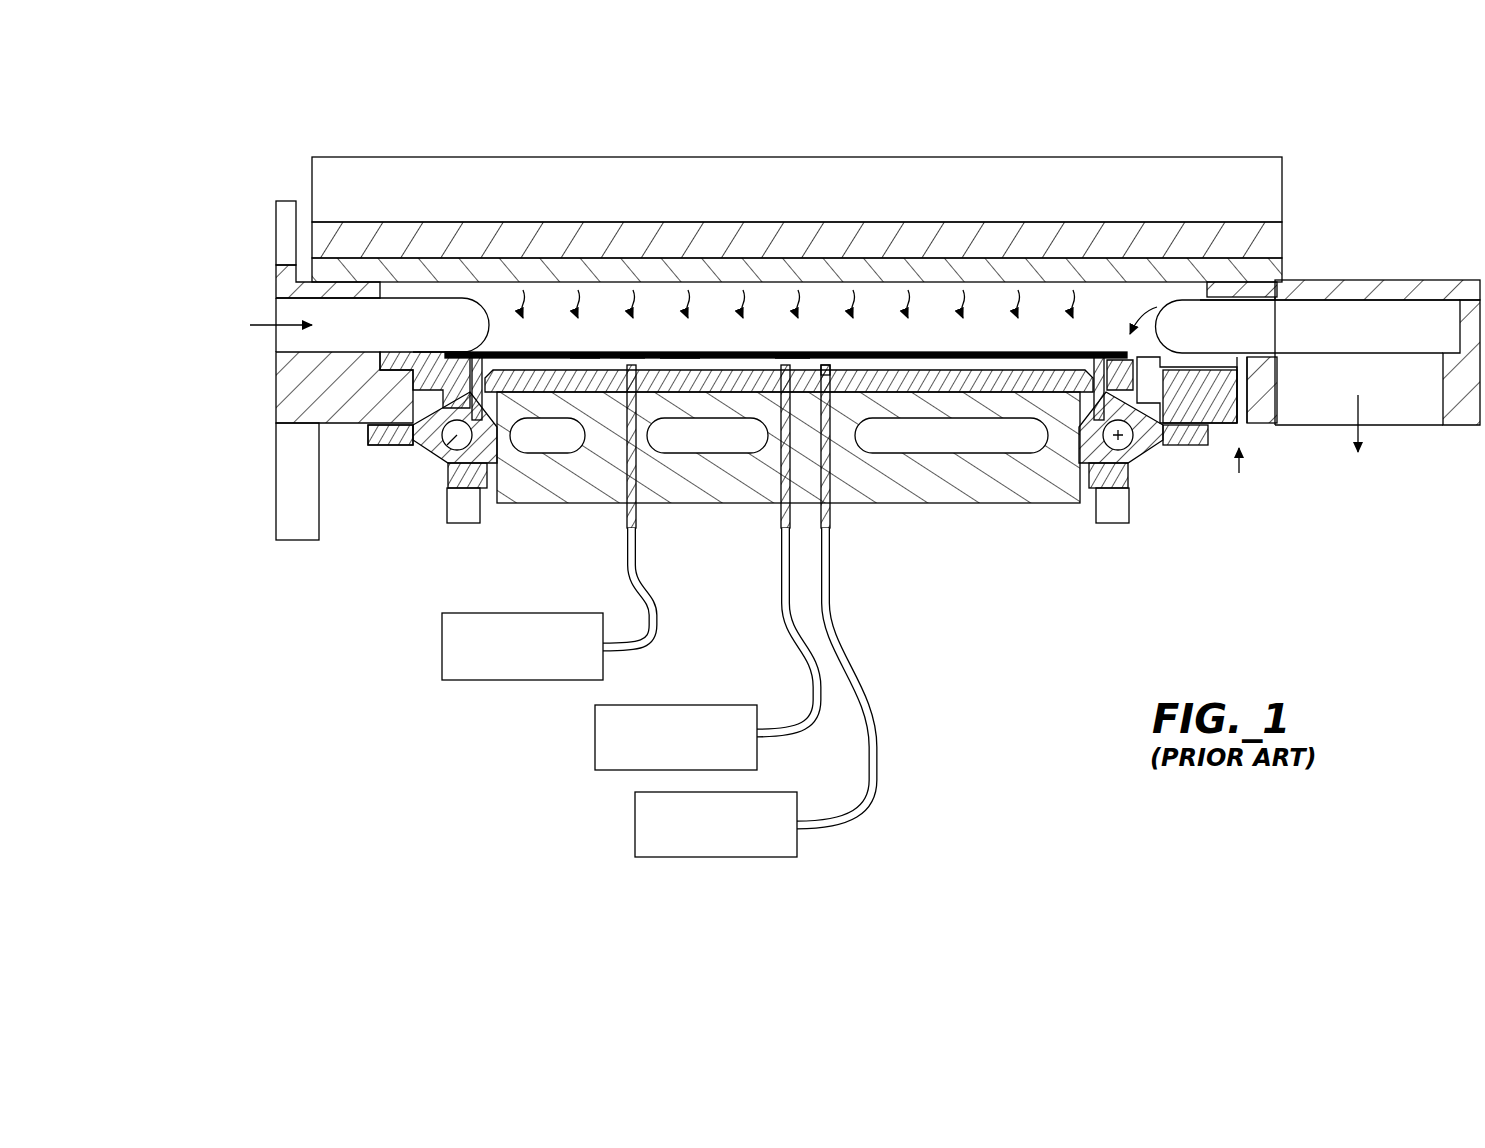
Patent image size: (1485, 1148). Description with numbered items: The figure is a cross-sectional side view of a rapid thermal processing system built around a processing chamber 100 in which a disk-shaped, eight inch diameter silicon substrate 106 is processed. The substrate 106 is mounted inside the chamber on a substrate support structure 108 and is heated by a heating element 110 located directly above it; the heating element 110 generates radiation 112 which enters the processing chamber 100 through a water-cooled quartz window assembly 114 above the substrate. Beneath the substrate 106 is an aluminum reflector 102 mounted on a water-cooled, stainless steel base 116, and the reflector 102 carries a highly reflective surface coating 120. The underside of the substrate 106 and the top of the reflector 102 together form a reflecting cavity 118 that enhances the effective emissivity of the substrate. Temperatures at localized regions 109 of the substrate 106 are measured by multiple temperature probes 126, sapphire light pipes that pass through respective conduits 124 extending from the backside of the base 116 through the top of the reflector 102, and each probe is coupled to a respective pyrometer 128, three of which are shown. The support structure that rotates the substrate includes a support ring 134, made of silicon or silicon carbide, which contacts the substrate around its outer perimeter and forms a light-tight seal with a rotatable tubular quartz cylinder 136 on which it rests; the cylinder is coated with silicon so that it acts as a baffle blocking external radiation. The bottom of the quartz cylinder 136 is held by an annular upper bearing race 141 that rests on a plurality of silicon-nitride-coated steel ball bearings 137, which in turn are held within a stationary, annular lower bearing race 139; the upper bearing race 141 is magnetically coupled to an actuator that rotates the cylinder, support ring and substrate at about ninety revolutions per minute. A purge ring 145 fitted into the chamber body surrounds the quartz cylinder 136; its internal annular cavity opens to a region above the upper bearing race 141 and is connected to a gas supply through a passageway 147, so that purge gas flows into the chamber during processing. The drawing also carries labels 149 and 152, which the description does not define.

The processing chamber 100 is at (1372, 158).
The reflector 102 is at (997, 352).
The silicon substrate 106 is at (676, 352).
The substrate support structure 108 is at (1150, 352).
The localized regions 109 is at (632, 350).
The heating element 110 is at (931, 201).
The radiation 112 is at (585, 352).
The water-cooled quartz window assembly 114 is at (1287, 242).
The water-cooled stainless steel base 116 is at (908, 490).
The reflecting cavity 118 is at (583, 350).
The highly reflective surface coating 120 is at (945, 370).
The conduits 124 is at (625, 512).
The temperature probes 126 is at (642, 520).
The pyrometers 128 is at (555, 680).
The support ring 134 is at (492, 350).
The rotatable tubular quartz cylinder 136 is at (457, 352).
The ball bearings 137 is at (420, 467).
The lower bearing race 139 is at (445, 480).
The upper bearing race 141 is at (390, 446).
The purge ring 145 is at (387, 352).
The passageway 147 is at (1240, 425).
The exhaust passage 149 is at (1200, 330).
The reflective cavity 152 is at (825, 362).